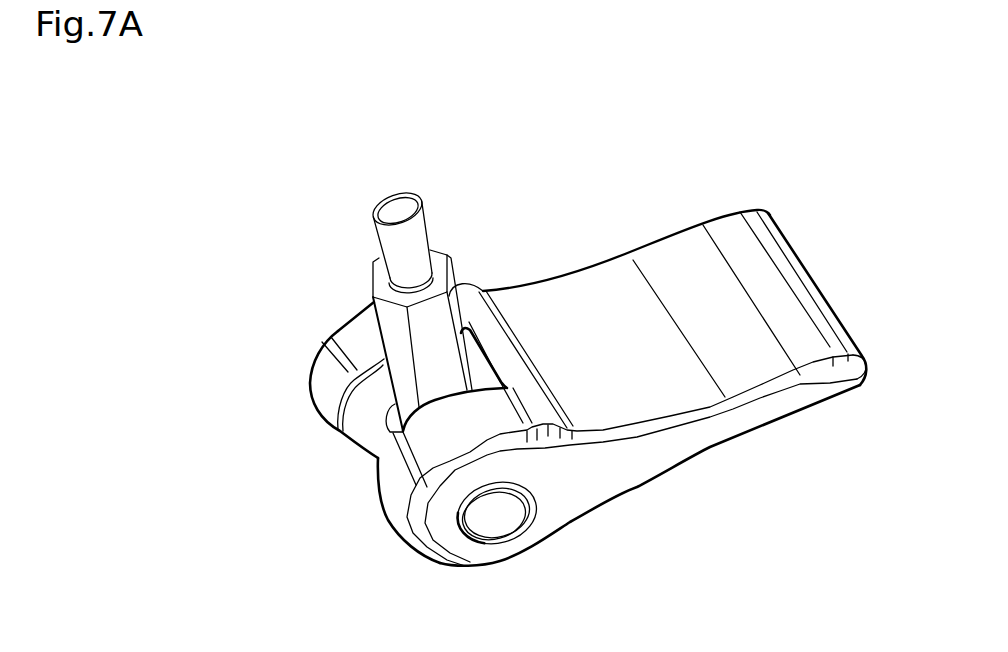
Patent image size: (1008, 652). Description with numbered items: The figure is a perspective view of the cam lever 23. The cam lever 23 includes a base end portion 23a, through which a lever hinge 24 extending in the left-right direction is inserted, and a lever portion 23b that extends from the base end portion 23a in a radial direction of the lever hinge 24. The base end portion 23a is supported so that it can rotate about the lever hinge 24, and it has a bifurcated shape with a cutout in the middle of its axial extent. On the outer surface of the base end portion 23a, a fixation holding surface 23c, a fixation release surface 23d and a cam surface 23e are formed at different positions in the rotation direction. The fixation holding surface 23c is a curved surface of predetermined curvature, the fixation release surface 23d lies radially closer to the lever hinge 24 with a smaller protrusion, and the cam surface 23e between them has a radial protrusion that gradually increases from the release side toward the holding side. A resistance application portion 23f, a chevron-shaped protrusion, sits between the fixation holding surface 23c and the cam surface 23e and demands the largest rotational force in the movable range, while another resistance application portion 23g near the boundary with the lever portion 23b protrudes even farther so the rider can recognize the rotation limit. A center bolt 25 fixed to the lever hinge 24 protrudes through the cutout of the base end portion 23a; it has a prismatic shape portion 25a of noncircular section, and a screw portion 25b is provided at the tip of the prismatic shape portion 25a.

The cam lever 23 is at (806, 427).
The base end portion 23a is at (358, 423).
The lever portion 23b is at (671, 264).
The fixation holding surface 23c is at (365, 325).
The fixation release surface 23d is at (537, 547).
The cam surface 23e is at (319, 389).
The resistance application portion 23f is at (333, 334).
The resistance application portion 23g is at (505, 353).
The lever hinge 24 is at (495, 527).
The center bolt 25 is at (364, 243).
The prismatic shape portion 25a is at (432, 321).
The screw portion 25b is at (415, 239).